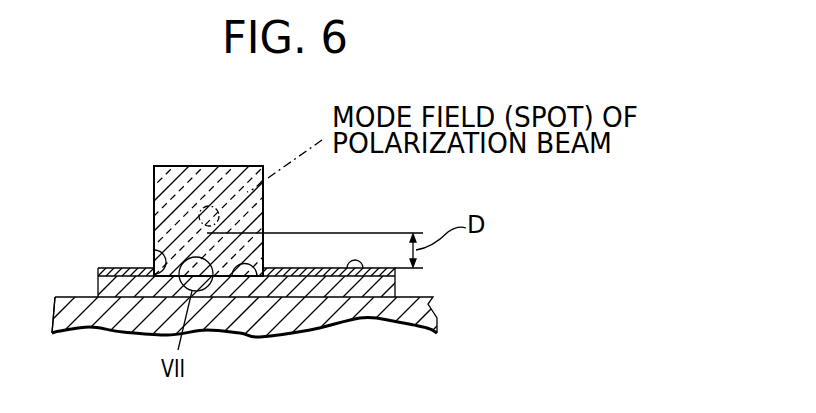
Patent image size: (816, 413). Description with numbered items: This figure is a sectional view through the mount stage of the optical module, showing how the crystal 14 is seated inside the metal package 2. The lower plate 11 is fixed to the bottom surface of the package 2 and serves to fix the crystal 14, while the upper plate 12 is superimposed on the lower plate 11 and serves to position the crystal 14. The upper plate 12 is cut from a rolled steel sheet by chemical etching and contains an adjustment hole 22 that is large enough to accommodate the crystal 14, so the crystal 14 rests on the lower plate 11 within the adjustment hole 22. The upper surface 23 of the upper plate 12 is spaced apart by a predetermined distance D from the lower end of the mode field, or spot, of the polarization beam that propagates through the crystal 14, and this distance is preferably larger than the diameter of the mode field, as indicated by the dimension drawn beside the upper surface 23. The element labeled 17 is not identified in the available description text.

The package 2 is at (70, 314).
The lower plate 11 is at (432, 303).
The upper plate 12 is at (400, 268).
The crystal 14 is at (185, 187).
The buffer layer 17 is at (258, 276).
The adjustment hole 22 is at (153, 262).
The upper surface 23 is at (367, 270).